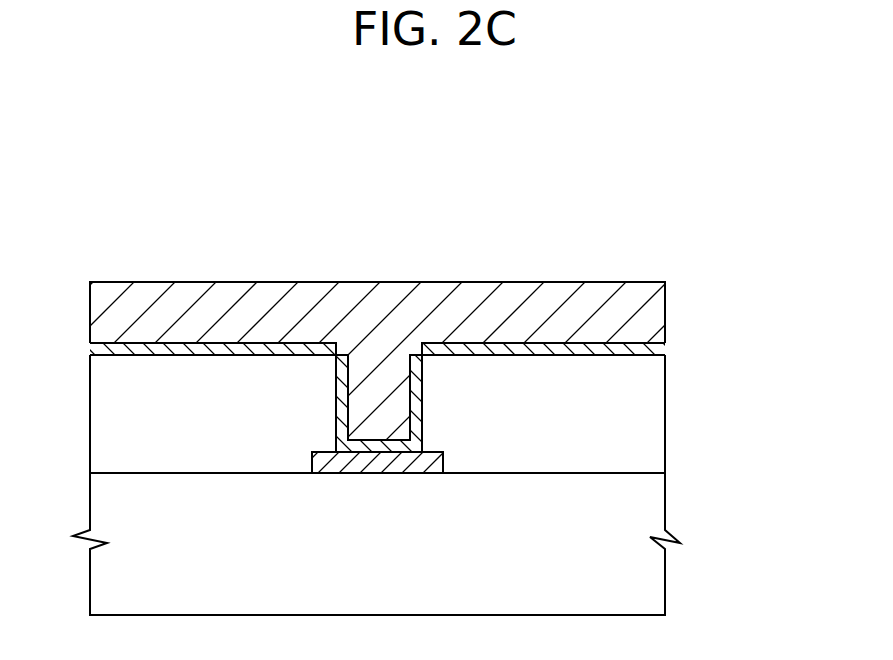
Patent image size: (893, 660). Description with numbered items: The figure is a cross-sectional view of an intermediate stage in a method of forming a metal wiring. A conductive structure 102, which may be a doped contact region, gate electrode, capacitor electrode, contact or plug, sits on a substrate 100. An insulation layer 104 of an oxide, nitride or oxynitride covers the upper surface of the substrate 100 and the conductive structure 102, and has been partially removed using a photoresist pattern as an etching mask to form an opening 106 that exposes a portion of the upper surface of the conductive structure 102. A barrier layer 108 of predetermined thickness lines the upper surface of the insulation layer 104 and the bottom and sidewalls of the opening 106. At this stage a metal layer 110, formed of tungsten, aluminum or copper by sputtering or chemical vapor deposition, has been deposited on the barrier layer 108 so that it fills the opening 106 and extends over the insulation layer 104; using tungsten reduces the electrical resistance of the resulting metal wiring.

The substrate 100 is at (650, 520).
The conductive structure 102 is at (433, 463).
The insulation layer 104 is at (650, 422).
The opening 106 is at (427, 394).
The barrier layer 108 is at (648, 348).
The metal layer 110 is at (650, 308).